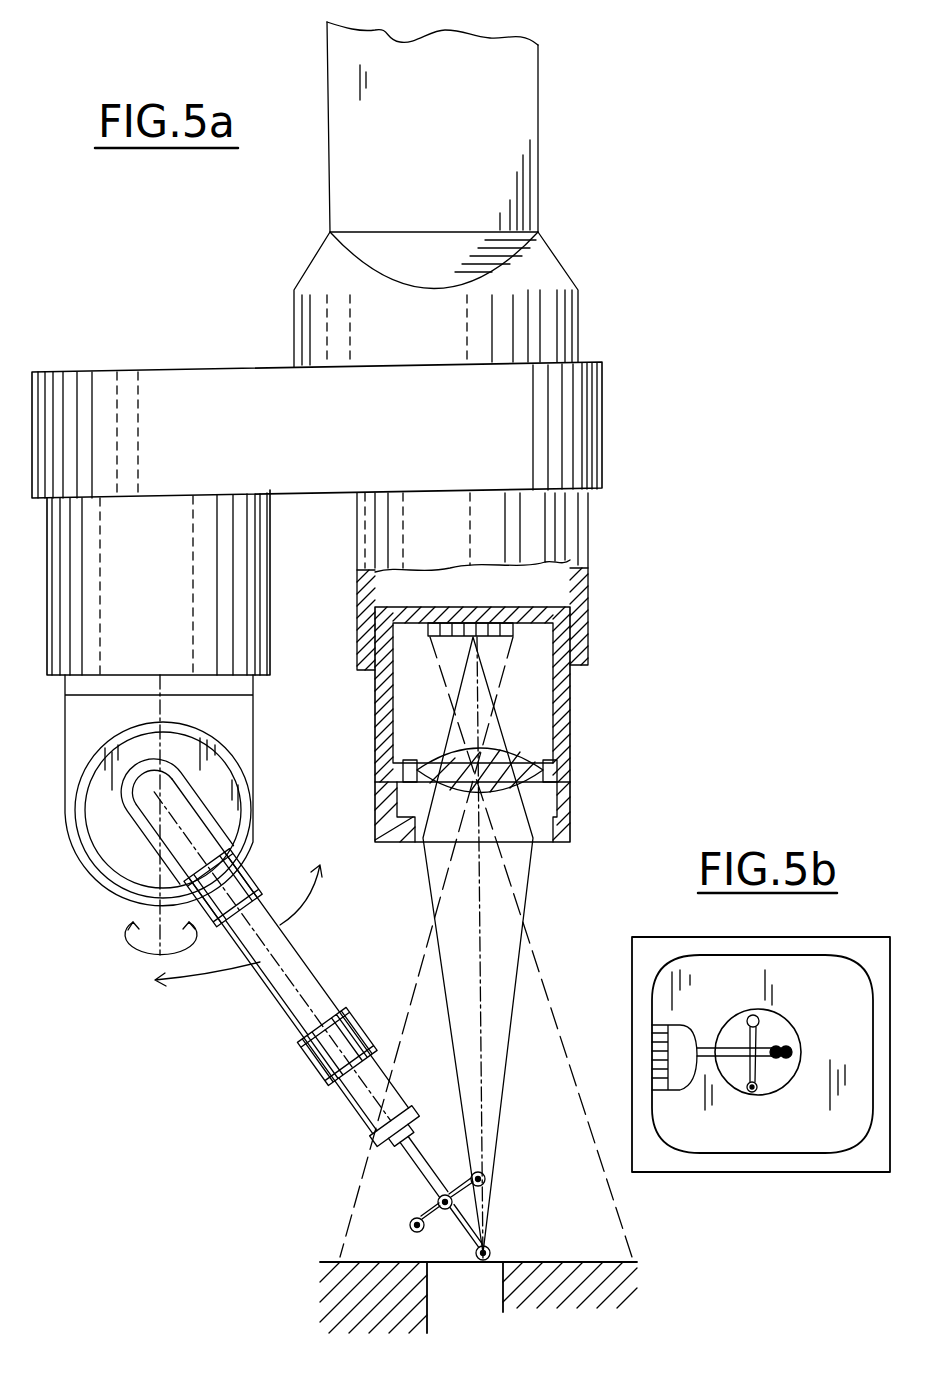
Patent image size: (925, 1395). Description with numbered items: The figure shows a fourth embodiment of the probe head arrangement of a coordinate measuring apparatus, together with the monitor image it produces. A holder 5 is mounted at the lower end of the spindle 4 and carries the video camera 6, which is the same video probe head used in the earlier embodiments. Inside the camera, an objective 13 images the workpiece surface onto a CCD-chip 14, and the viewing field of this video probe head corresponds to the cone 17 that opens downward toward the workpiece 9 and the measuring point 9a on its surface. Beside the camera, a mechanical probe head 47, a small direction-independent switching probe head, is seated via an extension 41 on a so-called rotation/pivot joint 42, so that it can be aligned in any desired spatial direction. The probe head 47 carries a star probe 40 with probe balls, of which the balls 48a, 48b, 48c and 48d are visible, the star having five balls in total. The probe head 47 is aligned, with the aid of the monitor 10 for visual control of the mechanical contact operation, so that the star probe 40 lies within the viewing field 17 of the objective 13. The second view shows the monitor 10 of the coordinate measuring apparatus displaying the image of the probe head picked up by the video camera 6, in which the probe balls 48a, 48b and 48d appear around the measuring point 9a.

In FIG. 5a, the spindle 4 is at (523, 127).
In FIG. 5a, the holder 5 is at (585, 425).
In FIG. 5a, the video camera 6 is at (566, 712).
In FIG. 5a, the workpiece 9 is at (571, 1262).
In FIG. 5a, the measuring point on workpiece 9a is at (496, 1258).
In FIG. 5b, the measuring point on workpiece 9a is at (746, 1026).
In FIG. 5b, the monitor 10 is at (838, 943).
In FIG. 5a, the objective 13 is at (520, 838).
In FIG. 5a, the CCD-chip 14 is at (500, 640).
In FIG. 5a, the viewing field cone 17 is at (535, 950).
In FIG. 5a, the star probe 40 is at (410, 1163).
In FIG. 5a, the extension 41 is at (318, 988).
In FIG. 5a, the rotation/pivot joint 42 is at (236, 728).
In FIG. 5a, the mechanical probe head 47 is at (345, 1118).
In FIG. 5a, the probe ball 48a is at (484, 1260).
In FIG. 5b, the probe ball 48a is at (792, 1052).
In FIG. 5a, the probe ball 48b is at (486, 1178).
In FIG. 5b, the probe ball 48b is at (778, 1044).
In FIG. 5a, the probe ball 48c is at (409, 1226).
In FIG. 5a, the probe ball 48d is at (443, 1192).
In FIG. 5b, the probe ball 48d is at (752, 1094).